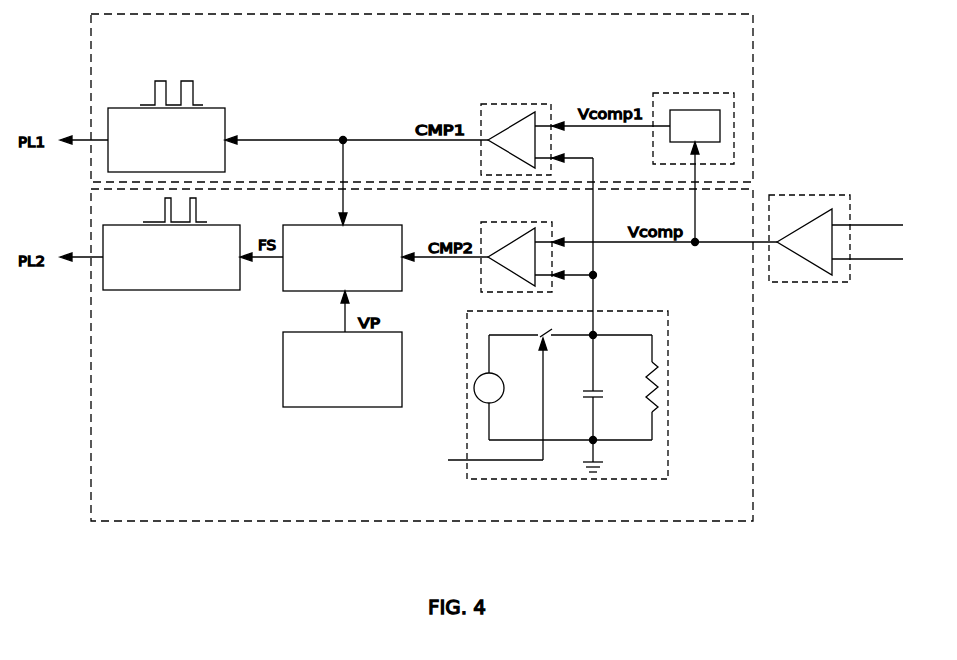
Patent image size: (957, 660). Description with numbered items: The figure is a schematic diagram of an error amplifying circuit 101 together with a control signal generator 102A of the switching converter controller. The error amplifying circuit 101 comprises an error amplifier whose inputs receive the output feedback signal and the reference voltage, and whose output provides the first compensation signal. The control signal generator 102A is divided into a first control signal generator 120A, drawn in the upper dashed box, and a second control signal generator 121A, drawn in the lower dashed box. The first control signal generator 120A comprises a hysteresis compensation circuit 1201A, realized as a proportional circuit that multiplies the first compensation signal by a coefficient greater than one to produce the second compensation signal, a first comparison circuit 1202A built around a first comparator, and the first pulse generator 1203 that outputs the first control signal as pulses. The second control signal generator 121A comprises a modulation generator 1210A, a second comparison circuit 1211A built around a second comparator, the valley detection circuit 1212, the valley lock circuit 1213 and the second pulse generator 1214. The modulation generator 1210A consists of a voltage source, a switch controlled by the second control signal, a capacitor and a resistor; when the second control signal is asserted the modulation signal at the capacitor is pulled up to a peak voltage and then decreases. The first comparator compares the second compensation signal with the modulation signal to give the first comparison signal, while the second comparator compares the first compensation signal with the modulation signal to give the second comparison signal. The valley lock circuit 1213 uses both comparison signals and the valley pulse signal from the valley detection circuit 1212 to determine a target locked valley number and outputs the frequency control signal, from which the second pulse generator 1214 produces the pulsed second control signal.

The control signal generator 102A is at (390, 267).
The first control signal generator 120A is at (163, 51).
The second control signal generator 121A is at (177, 491).
The error amplifying circuit 101 is at (838, 195).
The hysteresis compensation circuit 1201A is at (705, 80).
The first comparison circuit 1202A is at (515, 90).
The first pulse generator 1203 is at (236, 100).
The modulation generator 1210A is at (513, 479).
The second comparison circuit 1211A is at (481, 278).
The valley detection circuit 1212 is at (312, 407).
The valley lock circuit 1213 is at (306, 291).
The second pulse generator 1214 is at (166, 290).